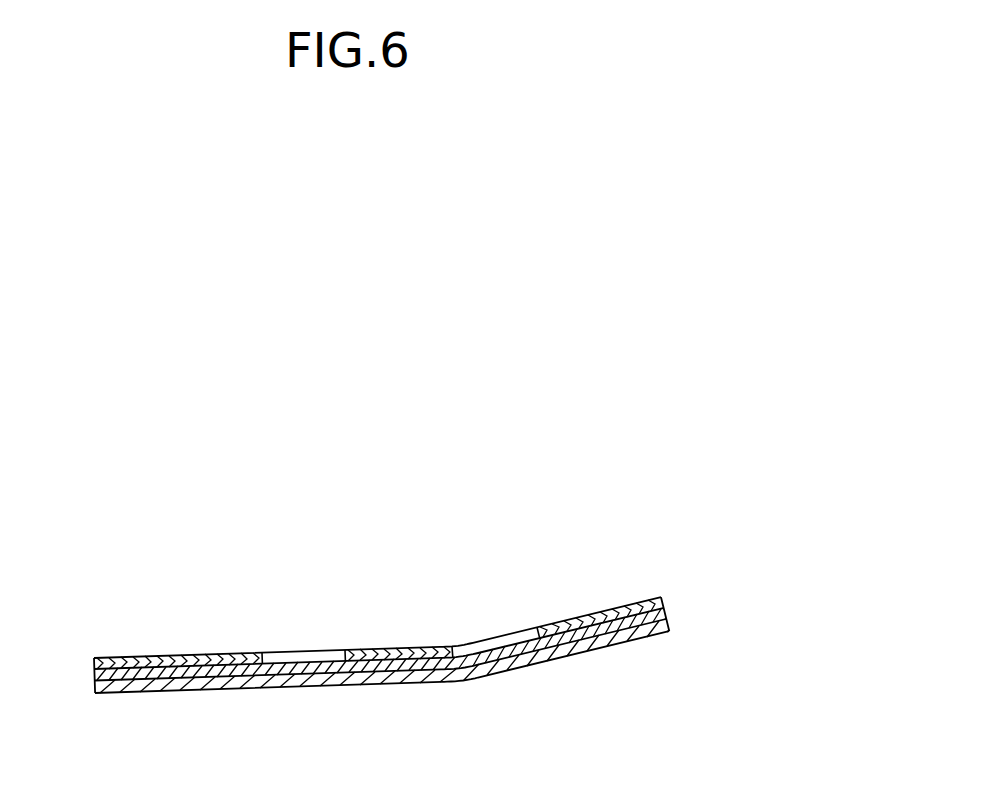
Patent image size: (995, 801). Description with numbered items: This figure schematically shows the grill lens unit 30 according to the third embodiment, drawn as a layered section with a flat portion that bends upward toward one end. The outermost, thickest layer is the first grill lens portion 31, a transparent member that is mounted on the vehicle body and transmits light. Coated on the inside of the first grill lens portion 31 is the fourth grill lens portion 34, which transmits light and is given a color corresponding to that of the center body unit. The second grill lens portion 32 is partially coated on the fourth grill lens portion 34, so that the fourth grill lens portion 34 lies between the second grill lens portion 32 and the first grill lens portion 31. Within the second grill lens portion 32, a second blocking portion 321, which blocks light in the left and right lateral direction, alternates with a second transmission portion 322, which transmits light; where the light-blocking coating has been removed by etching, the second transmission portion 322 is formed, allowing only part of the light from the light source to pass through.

The grill lens unit 30 is at (625, 392).
The first grill lens portion 31 is at (93, 688).
The second grill lens portion 32 is at (305, 538).
The second blocking portion 321 is at (155, 658).
The second transmission portion 322 is at (320, 655).
The fourth grill lens portion 34 is at (93, 670).